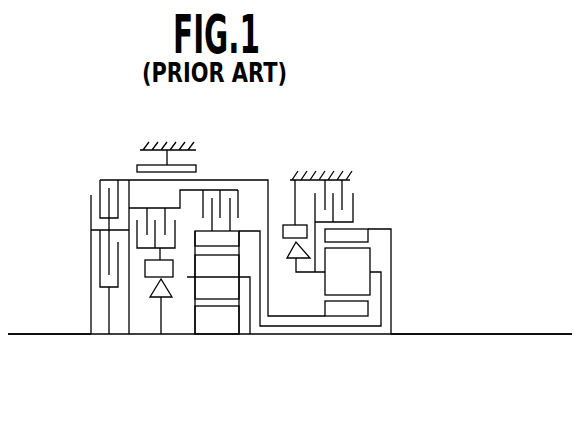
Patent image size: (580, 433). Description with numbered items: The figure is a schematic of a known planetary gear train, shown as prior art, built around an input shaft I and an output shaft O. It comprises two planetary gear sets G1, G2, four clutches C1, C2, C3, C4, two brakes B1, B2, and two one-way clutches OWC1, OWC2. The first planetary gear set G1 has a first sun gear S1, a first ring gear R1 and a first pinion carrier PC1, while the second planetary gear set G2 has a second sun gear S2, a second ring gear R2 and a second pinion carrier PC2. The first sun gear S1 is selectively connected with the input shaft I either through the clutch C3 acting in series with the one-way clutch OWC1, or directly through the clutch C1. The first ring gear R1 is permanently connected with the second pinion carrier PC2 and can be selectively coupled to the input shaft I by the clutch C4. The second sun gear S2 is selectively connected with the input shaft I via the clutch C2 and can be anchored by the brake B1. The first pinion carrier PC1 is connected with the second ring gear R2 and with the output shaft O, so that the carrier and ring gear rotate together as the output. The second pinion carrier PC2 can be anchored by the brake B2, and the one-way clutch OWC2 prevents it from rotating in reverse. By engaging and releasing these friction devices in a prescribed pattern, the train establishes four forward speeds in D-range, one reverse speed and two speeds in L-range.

The input shaft I is at (52, 333).
The output shaft O is at (463, 333).
The clutch C1 is at (88, 247).
The clutch C2 is at (88, 208).
The clutch C3 is at (144, 252).
The clutch C4 is at (243, 192).
The brake B1 is at (137, 163).
The brake B2 is at (350, 175).
The one-way clutch OWC1 is at (167, 307).
The one-way clutch OWC2 is at (270, 326).
The first planetary gear set G1 is at (229, 338).
The second planetary gear set G2 is at (395, 226).
The first ring gear R1 is at (200, 228).
The second ring gear R2 is at (363, 237).
The first pinion carrier PC1 is at (246, 305).
The second pinion carrier PC2 is at (378, 272).
The first sun gear S1 is at (205, 328).
The second sun gear S2 is at (362, 303).